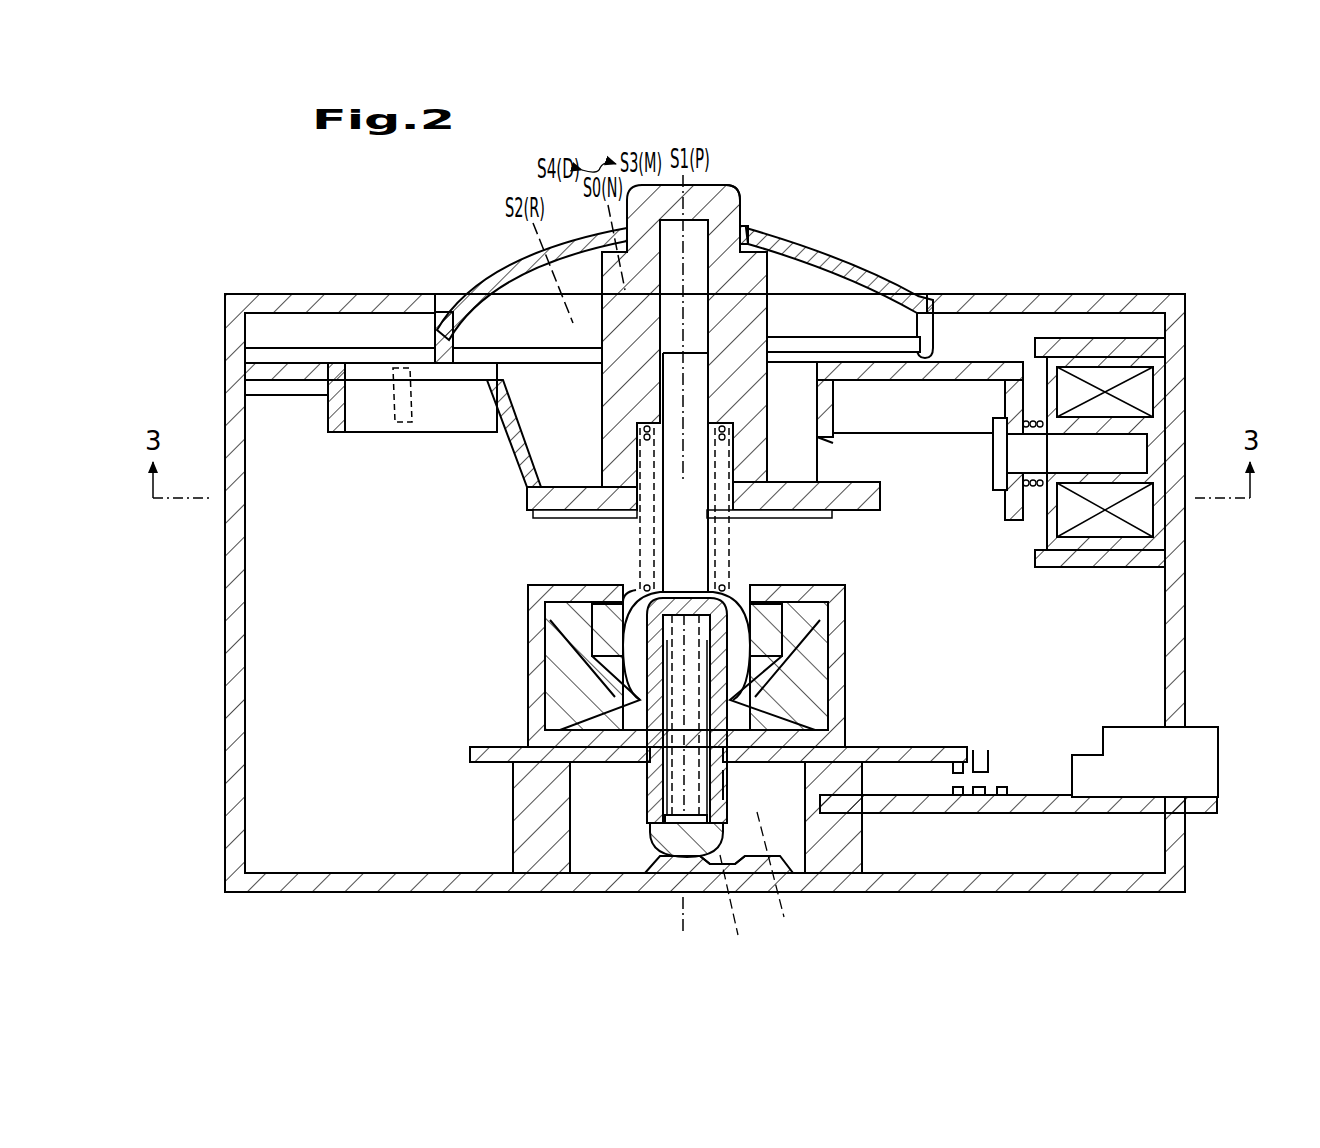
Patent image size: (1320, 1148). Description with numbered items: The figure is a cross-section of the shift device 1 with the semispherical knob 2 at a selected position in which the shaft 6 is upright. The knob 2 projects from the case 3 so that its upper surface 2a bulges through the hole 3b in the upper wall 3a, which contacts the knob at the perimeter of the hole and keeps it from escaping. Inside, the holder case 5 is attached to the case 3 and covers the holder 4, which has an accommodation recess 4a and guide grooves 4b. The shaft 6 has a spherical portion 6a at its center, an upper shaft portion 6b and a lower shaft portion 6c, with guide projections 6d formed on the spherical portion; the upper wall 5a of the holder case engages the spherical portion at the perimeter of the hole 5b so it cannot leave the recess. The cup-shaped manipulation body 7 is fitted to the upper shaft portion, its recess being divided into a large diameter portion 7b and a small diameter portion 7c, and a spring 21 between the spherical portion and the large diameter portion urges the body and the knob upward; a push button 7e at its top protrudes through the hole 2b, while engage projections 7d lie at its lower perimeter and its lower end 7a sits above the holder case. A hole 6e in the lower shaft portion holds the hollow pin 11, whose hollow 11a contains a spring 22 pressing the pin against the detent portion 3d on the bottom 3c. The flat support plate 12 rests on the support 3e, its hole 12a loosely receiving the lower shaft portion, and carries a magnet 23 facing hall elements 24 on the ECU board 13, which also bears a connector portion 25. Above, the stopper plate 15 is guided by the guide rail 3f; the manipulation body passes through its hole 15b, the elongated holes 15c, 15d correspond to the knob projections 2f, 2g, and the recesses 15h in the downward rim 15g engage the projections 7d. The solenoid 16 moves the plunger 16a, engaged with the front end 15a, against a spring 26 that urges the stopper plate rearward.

The shift device 1 is at (262, 272).
The semispherical knob 2 is at (834, 250).
The upper surface 2a is at (866, 270).
The hole 2b is at (752, 226).
The engage projection 2f is at (935, 347).
The engage projection 2g is at (438, 338).
The case 3 is at (1100, 292).
The upper wall 3a is at (1022, 298).
The hole 3b is at (922, 290).
The bottom 3c is at (462, 875).
The detent portion 3d is at (719, 873).
The support 3e is at (513, 788).
The guide rail 3f is at (290, 392).
The holder 4 is at (560, 648).
The accommodation recess 4a is at (743, 687).
The guide groove 4b is at (608, 680).
The holder case 5 is at (530, 672).
The upper wall 5a is at (583, 588).
The hole 5b is at (638, 595).
The shaft 6 is at (708, 548).
The spherical portion 6a is at (745, 622).
The upper shaft portion 6b is at (683, 346).
The lower shaft portion 6c is at (730, 800).
The guide projection 6d is at (598, 638).
The hole 6e is at (725, 845).
The manipulation body 7 is at (771, 305).
The piston lower end 7a is at (634, 512).
The large diameter portion 7b is at (745, 424).
The small diameter portion 7c is at (710, 278).
The engage projection 7d is at (528, 512).
The push button 7e is at (743, 196).
The pin 11 is at (660, 840).
The hollow 11a is at (728, 776).
The support plate 12 is at (903, 748).
The hole 12a is at (652, 765).
The ECU board 13 is at (1063, 815).
The stopper plate 15 is at (696, 407).
The front end 15a is at (1008, 445).
The hole 15b is at (515, 350).
The elongated hole 15c is at (1008, 393).
The elongated hole 15d is at (350, 370).
The rim 15g is at (497, 412).
The engage recess 15h is at (528, 495).
The solenoid 16 is at (1100, 553).
The plunger 16a is at (996, 462).
The spring 21 is at (651, 432).
The spring 22 is at (660, 820).
The magnet 23 is at (955, 757).
The hall element 24 is at (1002, 797).
The connector portion 25 is at (1207, 727).
The spring 26 is at (1037, 495).